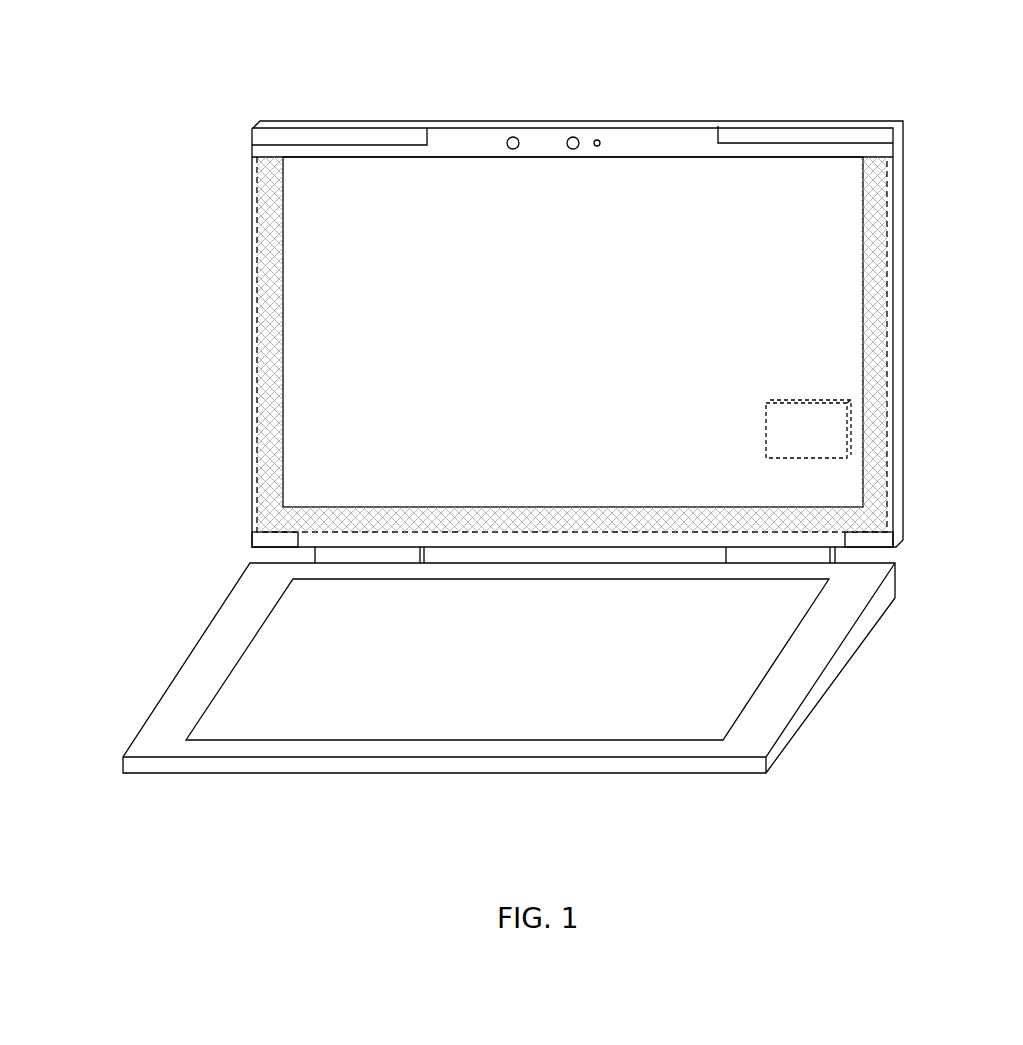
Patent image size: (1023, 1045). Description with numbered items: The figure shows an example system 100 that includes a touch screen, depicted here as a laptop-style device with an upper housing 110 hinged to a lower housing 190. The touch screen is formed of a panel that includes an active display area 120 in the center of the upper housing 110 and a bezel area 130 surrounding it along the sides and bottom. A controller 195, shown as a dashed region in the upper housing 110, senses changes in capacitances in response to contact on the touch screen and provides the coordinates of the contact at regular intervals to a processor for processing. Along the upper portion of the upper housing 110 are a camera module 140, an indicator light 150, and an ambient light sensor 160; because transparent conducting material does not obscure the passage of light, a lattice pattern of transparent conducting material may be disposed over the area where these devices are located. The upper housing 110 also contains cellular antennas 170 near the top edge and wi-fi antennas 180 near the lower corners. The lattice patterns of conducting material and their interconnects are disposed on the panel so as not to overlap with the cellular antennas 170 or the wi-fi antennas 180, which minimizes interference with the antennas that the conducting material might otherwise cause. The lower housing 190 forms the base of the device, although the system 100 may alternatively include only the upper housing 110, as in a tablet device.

The system 100 is at (148, 91).
The upper housing 110 is at (897, 297).
The active display area 120 is at (298, 168).
The bezel area 130 is at (875, 165).
The camera module 140 is at (573, 137).
The indicator light 150 is at (600, 140).
The ambient light sensor 160 is at (511, 137).
The cellular antennas 170 is at (723, 134).
The wi-fi antennas 180 is at (870, 537).
The lower housing 190 is at (180, 703).
The controller 195 is at (852, 433).